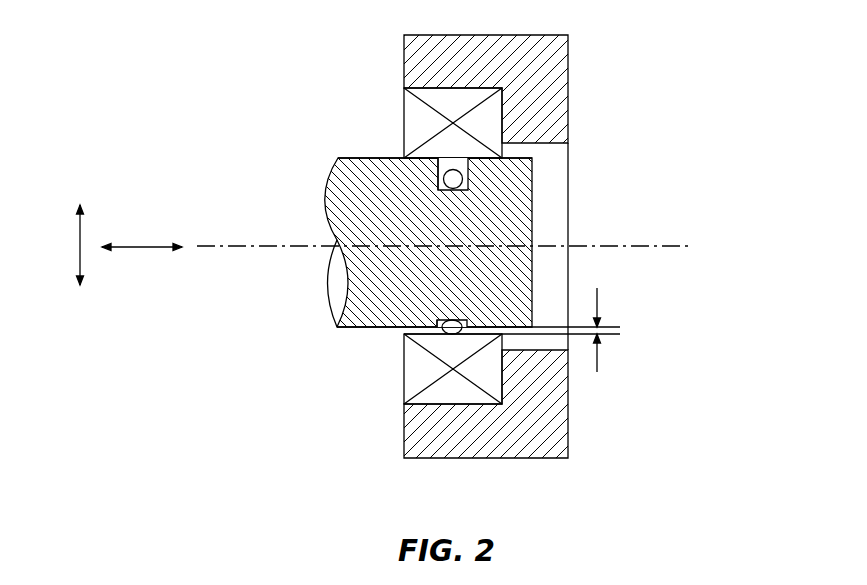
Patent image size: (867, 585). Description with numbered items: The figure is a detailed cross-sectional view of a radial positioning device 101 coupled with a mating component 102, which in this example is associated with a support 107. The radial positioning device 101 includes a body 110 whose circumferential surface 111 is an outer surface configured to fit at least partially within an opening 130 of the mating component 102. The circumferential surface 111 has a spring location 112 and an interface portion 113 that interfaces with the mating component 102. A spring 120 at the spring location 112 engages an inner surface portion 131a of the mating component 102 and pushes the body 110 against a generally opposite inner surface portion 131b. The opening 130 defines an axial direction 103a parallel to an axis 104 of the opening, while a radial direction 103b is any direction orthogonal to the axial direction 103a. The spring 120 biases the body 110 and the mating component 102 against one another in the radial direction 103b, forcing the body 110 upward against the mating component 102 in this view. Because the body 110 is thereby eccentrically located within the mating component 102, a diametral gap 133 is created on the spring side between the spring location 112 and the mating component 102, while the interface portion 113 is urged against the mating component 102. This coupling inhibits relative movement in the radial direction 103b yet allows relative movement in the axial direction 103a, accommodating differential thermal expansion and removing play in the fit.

The radial positioning device 101 is at (584, 172).
The mating component 102 is at (380, 112).
The axial direction 103a is at (146, 245).
The radial direction 103b is at (80, 244).
The axis 104 is at (652, 249).
The support 107 is at (538, 437).
The body 110 is at (518, 216).
The circumferential surface 111 is at (365, 158).
The spring location 112 is at (480, 328).
The interface portion 113 is at (480, 158).
The spring 120 is at (443, 333).
The opening 130 is at (399, 335).
The inner surface portion 131a is at (437, 327).
The inner surface portion 131b is at (430, 158).
The diametral gap 133 is at (600, 355).